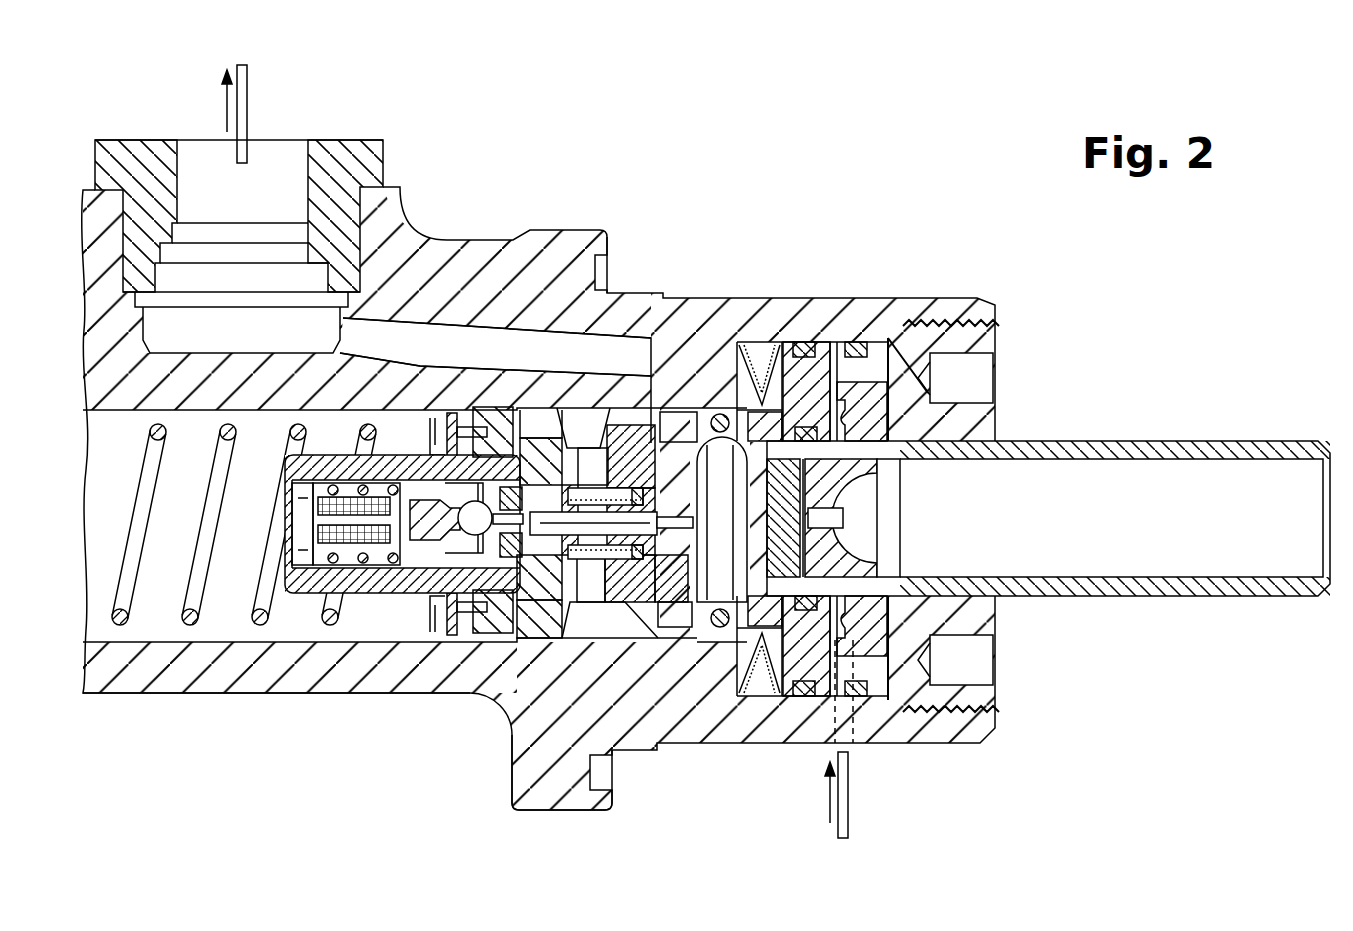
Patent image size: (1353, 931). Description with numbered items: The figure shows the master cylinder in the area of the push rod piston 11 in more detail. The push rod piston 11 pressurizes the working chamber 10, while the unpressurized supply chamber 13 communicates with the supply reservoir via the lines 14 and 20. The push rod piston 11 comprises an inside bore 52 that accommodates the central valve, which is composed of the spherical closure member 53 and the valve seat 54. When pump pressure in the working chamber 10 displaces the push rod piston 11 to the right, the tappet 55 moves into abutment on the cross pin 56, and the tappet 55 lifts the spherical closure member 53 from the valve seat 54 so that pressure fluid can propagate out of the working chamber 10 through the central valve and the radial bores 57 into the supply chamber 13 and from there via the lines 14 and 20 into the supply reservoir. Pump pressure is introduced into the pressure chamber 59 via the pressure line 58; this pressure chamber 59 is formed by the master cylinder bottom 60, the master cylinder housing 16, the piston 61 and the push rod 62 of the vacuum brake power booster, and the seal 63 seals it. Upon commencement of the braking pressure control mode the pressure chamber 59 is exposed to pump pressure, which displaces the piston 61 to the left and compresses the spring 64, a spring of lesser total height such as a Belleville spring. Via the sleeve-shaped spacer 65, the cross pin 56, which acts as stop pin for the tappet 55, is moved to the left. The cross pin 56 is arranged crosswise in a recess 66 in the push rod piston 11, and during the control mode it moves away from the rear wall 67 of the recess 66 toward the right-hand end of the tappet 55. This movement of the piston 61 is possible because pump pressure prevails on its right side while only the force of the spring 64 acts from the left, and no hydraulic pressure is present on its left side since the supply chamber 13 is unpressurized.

The working chamber 10 is at (152, 623).
The push rod piston 11 is at (356, 595).
The supply chamber 13 is at (600, 640).
The line 14 is at (438, 342).
The master cylinder housing 16 is at (268, 696).
The line 20 is at (250, 118).
The inside bore 52 is at (392, 562).
The spherical closure member 53 is at (474, 535).
The valve seat 54 is at (535, 640).
The tappet 55 is at (548, 480).
The cross pin 56 is at (714, 612).
The radial bores 57 is at (597, 455).
The pressure line 58 is at (850, 805).
The pressure chamber 59 is at (837, 343).
The master cylinder bottom 60 is at (887, 338).
The piston 61 is at (795, 365).
The push rod 62 is at (1172, 440).
The seal 63 is at (872, 655).
The spring 64 is at (740, 640).
The sleeve-shaped spacer 65 is at (688, 605).
The recess 66 is at (755, 470).
The rear wall 67 is at (960, 305).